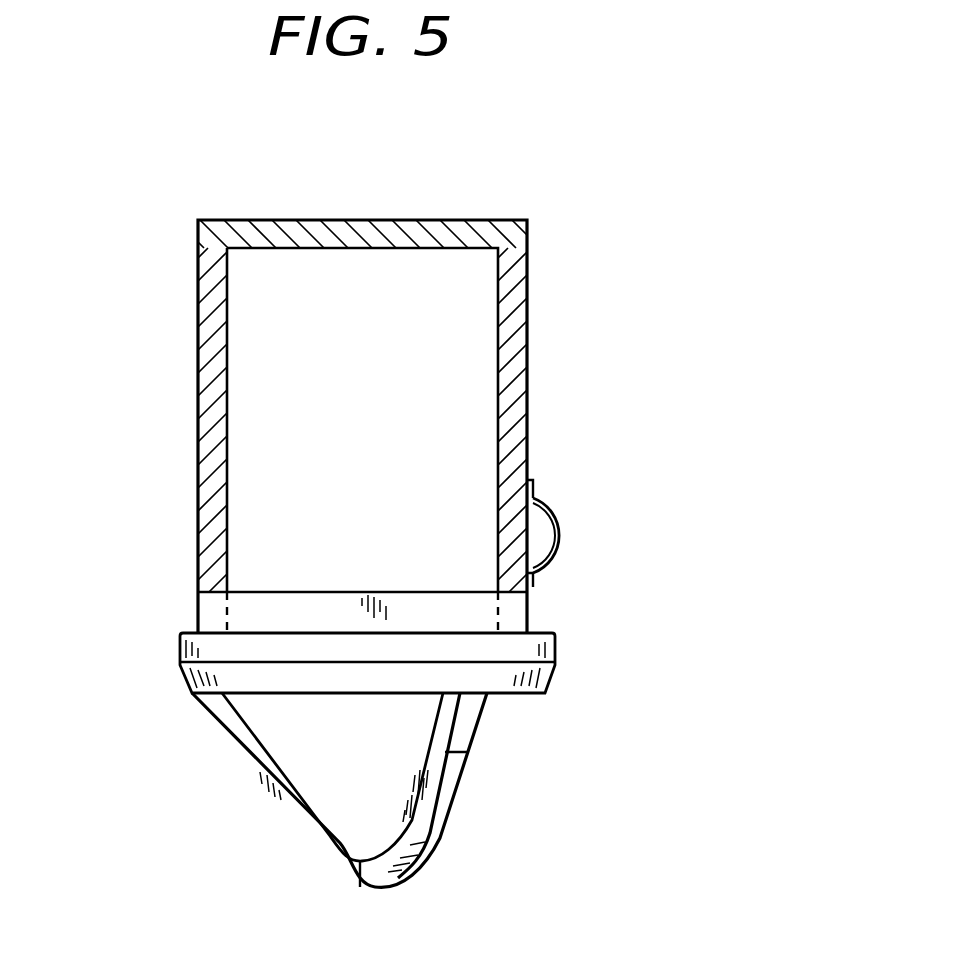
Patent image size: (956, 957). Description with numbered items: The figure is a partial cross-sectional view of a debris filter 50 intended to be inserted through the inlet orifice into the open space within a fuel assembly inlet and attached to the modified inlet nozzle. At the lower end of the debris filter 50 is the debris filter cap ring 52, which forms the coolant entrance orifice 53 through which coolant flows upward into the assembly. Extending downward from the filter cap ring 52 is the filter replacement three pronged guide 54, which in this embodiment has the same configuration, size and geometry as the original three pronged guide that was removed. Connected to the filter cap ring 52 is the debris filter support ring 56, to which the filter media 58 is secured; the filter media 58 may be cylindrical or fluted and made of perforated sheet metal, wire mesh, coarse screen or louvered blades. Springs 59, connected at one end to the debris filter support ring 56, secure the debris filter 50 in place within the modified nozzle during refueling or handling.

The debris filter 50 is at (755, 309).
The debris filter cap ring 52 is at (558, 648).
The coolant entrance orifice 53 is at (270, 695).
The filter replacement three pronged guide 54 is at (300, 818).
The debris filter support ring 56 is at (225, 616).
The filter media 58 is at (527, 305).
The springs 59 is at (555, 545).